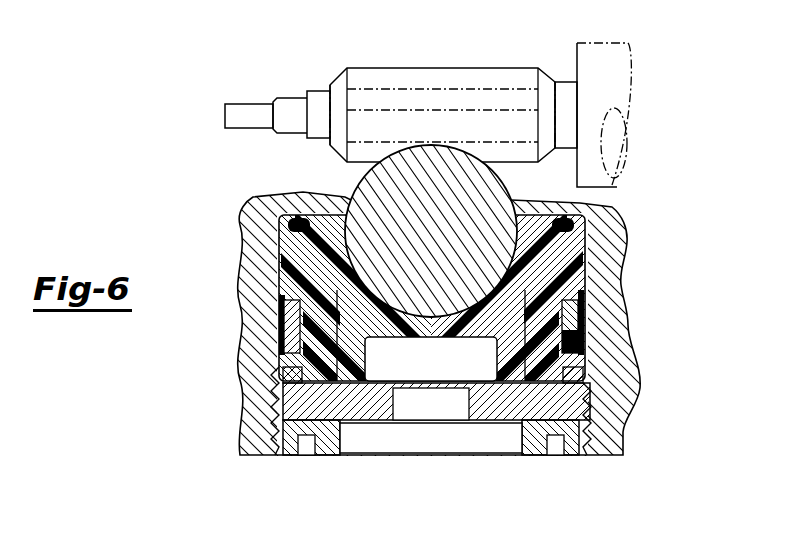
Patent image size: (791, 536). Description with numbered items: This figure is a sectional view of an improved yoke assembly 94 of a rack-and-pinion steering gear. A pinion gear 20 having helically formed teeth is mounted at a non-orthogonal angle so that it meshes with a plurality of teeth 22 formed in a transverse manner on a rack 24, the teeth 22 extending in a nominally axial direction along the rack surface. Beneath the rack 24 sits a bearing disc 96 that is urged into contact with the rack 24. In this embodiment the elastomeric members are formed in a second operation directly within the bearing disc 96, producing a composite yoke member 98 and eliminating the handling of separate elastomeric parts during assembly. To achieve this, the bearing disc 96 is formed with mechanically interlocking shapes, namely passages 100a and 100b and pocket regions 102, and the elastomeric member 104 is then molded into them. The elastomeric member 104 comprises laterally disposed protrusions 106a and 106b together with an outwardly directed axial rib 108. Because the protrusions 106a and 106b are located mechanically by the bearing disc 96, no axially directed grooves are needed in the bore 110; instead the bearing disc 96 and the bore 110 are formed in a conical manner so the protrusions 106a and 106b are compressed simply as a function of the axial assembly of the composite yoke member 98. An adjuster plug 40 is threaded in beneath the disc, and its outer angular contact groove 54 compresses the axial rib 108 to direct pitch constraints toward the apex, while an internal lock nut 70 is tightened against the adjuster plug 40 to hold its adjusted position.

The pinion gear 20 is at (443, 73).
The teeth 22 is at (56, 526).
The rack 24 is at (368, 171).
The adjuster plug 40 is at (590, 364).
The outer angular contact groove 54 is at (590, 363).
The internal lock nut 70 is at (578, 421).
The yoke assembly 94 is at (218, 297).
The bearing disc 96 is at (580, 214).
The composite yoke member 98 is at (583, 323).
The passage 100a is at (300, 313).
The passage 100b is at (547, 333).
The pocket regions 102 is at (153, 527).
The elastomeric member 104 is at (567, 237).
The laterally disposed protrusion 106a is at (282, 263).
The laterally disposed protrusion 106b is at (577, 287).
The outwardly directed axial rib 108 is at (277, 397).
The bore 110 is at (283, 304).